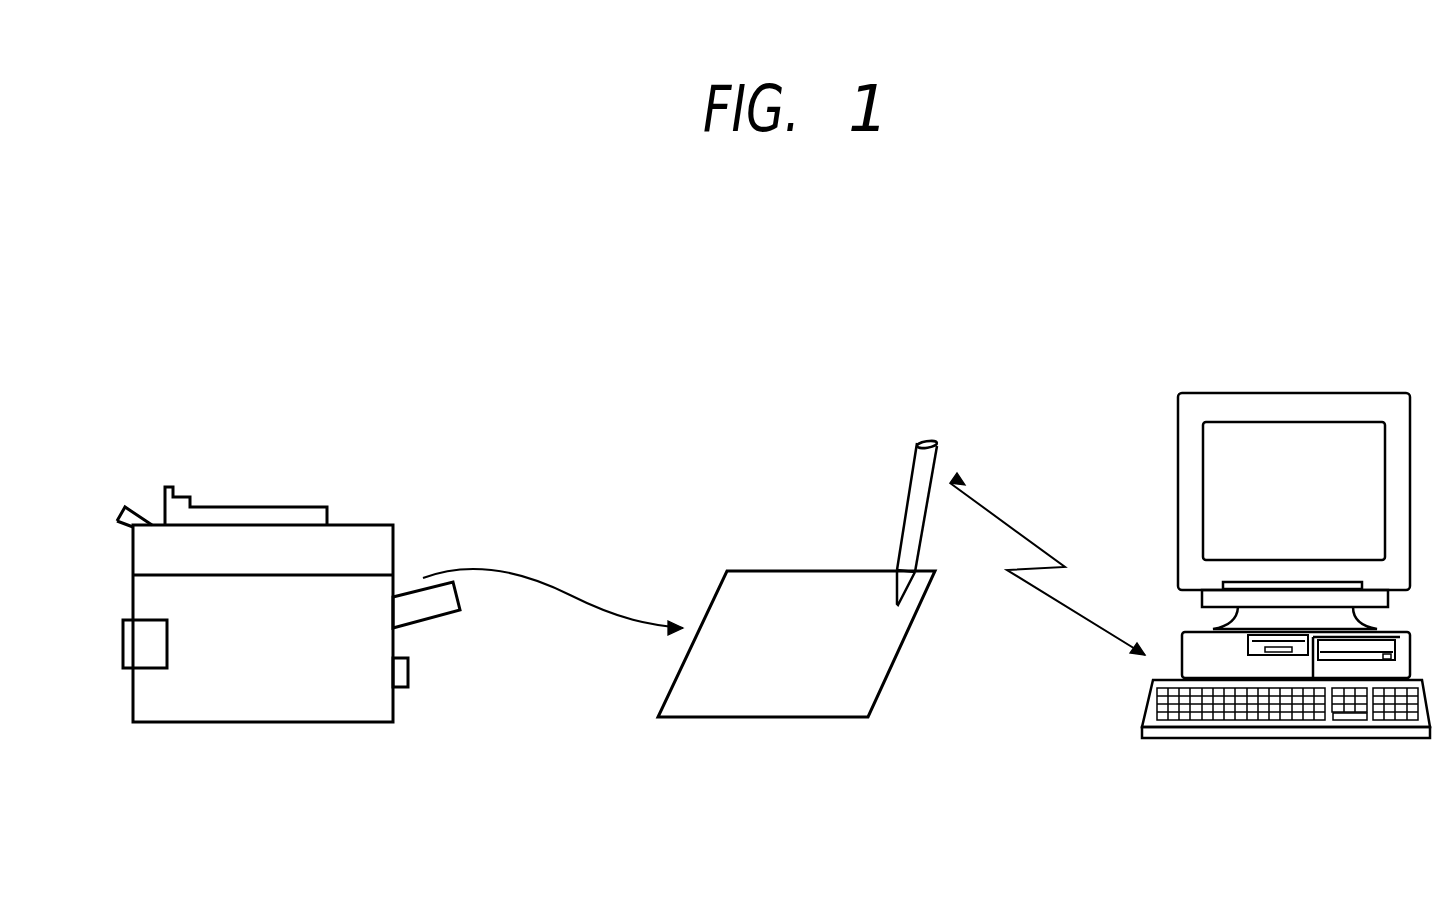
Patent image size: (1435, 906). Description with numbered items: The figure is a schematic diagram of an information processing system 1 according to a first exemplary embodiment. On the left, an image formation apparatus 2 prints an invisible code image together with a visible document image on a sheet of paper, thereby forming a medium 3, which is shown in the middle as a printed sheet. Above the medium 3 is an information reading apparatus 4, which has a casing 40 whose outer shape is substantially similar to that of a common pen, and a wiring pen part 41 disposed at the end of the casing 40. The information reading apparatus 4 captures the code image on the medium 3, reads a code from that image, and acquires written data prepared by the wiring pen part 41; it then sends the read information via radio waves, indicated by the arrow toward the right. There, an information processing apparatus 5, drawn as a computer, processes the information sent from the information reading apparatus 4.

The information processing system 1 is at (968, 292).
The image formation apparatus 2 is at (261, 517).
The medium 3 is at (740, 720).
The information reading apparatus 4 is at (857, 524).
The casing 40 is at (909, 492).
The wiring pen part 41 is at (907, 613).
The information processing apparatus 5 is at (1275, 407).